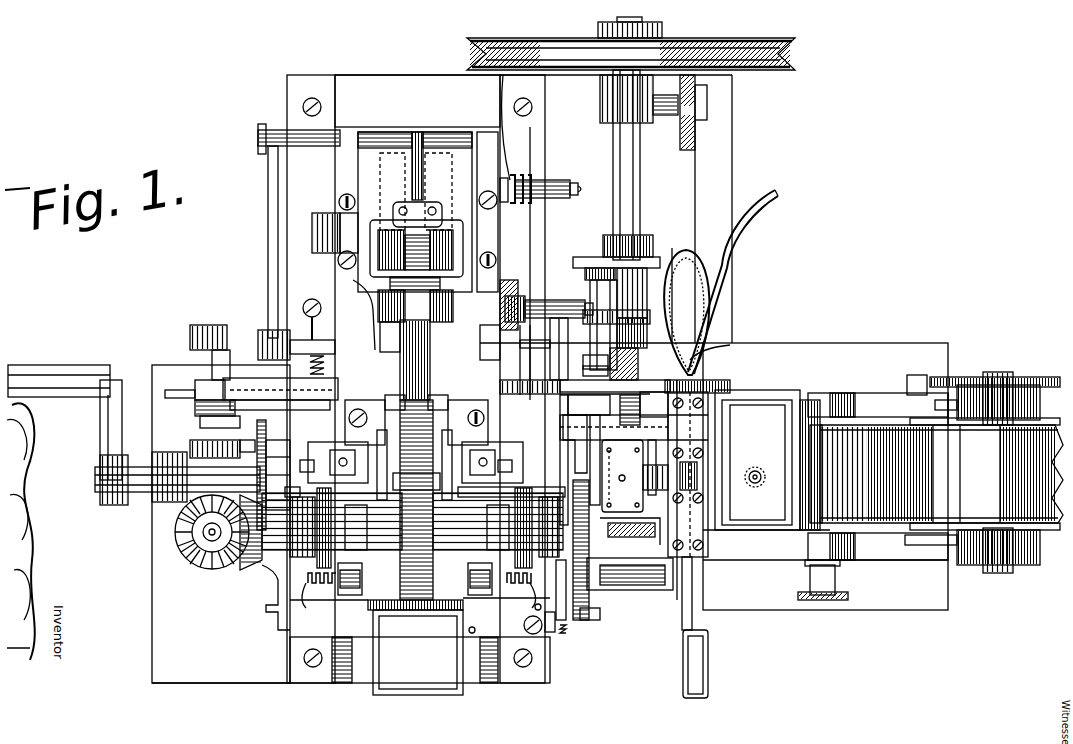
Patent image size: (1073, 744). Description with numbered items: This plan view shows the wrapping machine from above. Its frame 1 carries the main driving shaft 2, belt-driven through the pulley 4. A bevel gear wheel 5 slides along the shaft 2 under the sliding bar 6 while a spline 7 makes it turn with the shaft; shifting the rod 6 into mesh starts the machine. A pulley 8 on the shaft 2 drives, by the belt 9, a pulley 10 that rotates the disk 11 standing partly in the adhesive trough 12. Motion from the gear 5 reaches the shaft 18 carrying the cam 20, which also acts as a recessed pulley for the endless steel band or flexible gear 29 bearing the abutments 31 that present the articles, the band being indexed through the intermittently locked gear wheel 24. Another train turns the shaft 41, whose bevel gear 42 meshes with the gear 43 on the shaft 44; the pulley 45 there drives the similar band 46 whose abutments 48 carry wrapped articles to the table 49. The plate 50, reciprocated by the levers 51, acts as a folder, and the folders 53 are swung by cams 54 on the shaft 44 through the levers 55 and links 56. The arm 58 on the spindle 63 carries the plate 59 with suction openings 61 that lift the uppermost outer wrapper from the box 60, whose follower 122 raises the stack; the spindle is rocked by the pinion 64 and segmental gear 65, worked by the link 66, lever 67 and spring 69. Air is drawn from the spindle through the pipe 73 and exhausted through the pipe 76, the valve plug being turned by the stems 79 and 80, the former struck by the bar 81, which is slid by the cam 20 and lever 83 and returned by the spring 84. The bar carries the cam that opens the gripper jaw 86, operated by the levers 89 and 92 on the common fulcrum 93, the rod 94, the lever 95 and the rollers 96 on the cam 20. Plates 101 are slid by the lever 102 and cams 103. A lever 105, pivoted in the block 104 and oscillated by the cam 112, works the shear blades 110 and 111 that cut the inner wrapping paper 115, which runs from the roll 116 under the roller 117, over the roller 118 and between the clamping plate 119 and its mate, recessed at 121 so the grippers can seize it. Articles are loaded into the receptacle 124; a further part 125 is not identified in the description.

The frame 1 is at (748, 118).
The main driving shaft 2 is at (618, 147).
The pulley 4 is at (735, 38).
The bevel gear wheel 5 is at (718, 384).
The sliding bar 6 is at (688, 203).
The spline 7 is at (620, 327).
The pulley 8 is at (645, 268).
The belt 9 is at (640, 250).
The pulley 10 is at (585, 258).
The disk 11 is at (640, 530).
The trough 12 is at (630, 588).
The shaft 18 is at (140, 472).
The cam 20 is at (210, 470).
The gear wheel 24 is at (530, 389).
The endless band or flexible gear 29 is at (385, 305).
The abutments or projecting pieces 31 is at (385, 330).
The shaft 41 is at (212, 532).
The bevel gear wheel 42 is at (212, 532).
The gear wheel 43 is at (250, 565).
The shaft 44 is at (420, 615).
The pulley 45 is at (415, 575).
The endless band or flexible gear 46 is at (403, 570).
The projections or abutments 48 is at (415, 465).
The table 49 is at (418, 652).
The plate 50 is at (483, 342).
The levers 51 is at (508, 300).
The folders 53 is at (415, 462).
The cams 54 is at (417, 589).
The levers 55 is at (413, 499).
The links 56 is at (412, 470).
The arm 58 is at (760, 535).
The plate 59 is at (656, 500).
The box 60 is at (750, 530).
The openings 61 is at (635, 476).
The spindle 63 is at (700, 470).
The pinion 64 is at (720, 384).
The segmental gear 65 is at (708, 404).
The link 66 is at (730, 345).
The lever 67 is at (544, 349).
The spring 69 is at (520, 200).
The pipe 73 is at (700, 275).
The pipe 76 is at (762, 203).
The projecting stem 79 is at (630, 416).
The projecting stem 80 is at (660, 396).
The bar 81 is at (630, 415).
The lever 83 is at (210, 395).
The spring 84 is at (190, 330).
The jaw 86 is at (540, 398).
The lever 89 is at (180, 405).
The lever 92 is at (280, 394).
The fulcrum 93 is at (312, 336).
The rod 94 is at (265, 335).
The lever 95 is at (270, 218).
The rollers 96 is at (240, 640).
The plates 101 is at (416, 422).
The lever 102 is at (428, 580).
The cams 103 is at (445, 580).
The block 104 is at (540, 640).
The lever 105 is at (572, 628).
The blade 110 is at (560, 630).
The blade 111 is at (550, 625).
The cam 112 is at (600, 615).
The paper or wrapping material 115 is at (878, 476).
The roll 116 is at (941, 474).
The roller 117 is at (818, 492).
The roller 118 is at (585, 600).
The plate 119 is at (575, 460).
The recess 121 is at (589, 450).
The follower 122 is at (757, 460).
The receptacle 124 is at (378, 270).
The bar 125 is at (170, 392).